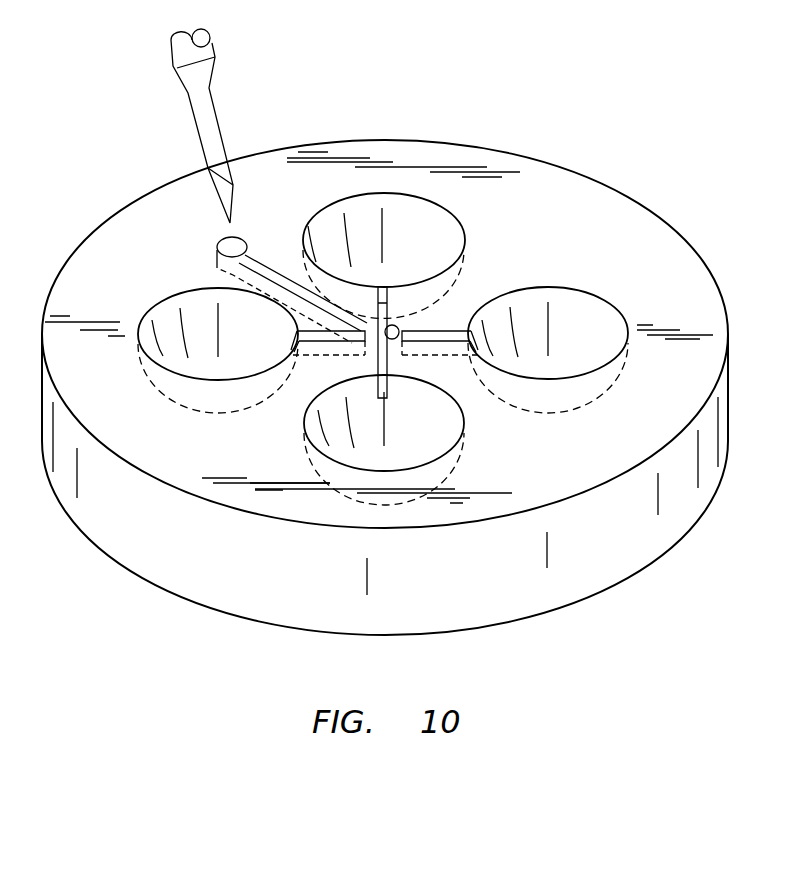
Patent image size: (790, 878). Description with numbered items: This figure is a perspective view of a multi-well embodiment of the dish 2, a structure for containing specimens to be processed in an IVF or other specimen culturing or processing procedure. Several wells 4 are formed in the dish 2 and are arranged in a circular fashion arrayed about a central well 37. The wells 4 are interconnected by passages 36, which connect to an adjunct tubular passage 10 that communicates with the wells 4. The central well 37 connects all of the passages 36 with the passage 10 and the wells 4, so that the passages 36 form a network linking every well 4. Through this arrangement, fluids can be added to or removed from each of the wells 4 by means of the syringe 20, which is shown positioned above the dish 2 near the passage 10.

The dish 2 is at (592, 158).
The well 4 is at (430, 240).
The tubular passage 10 is at (218, 243).
The syringe 20 is at (203, 53).
The passage 36 is at (272, 268).
The central well 37 is at (398, 328).